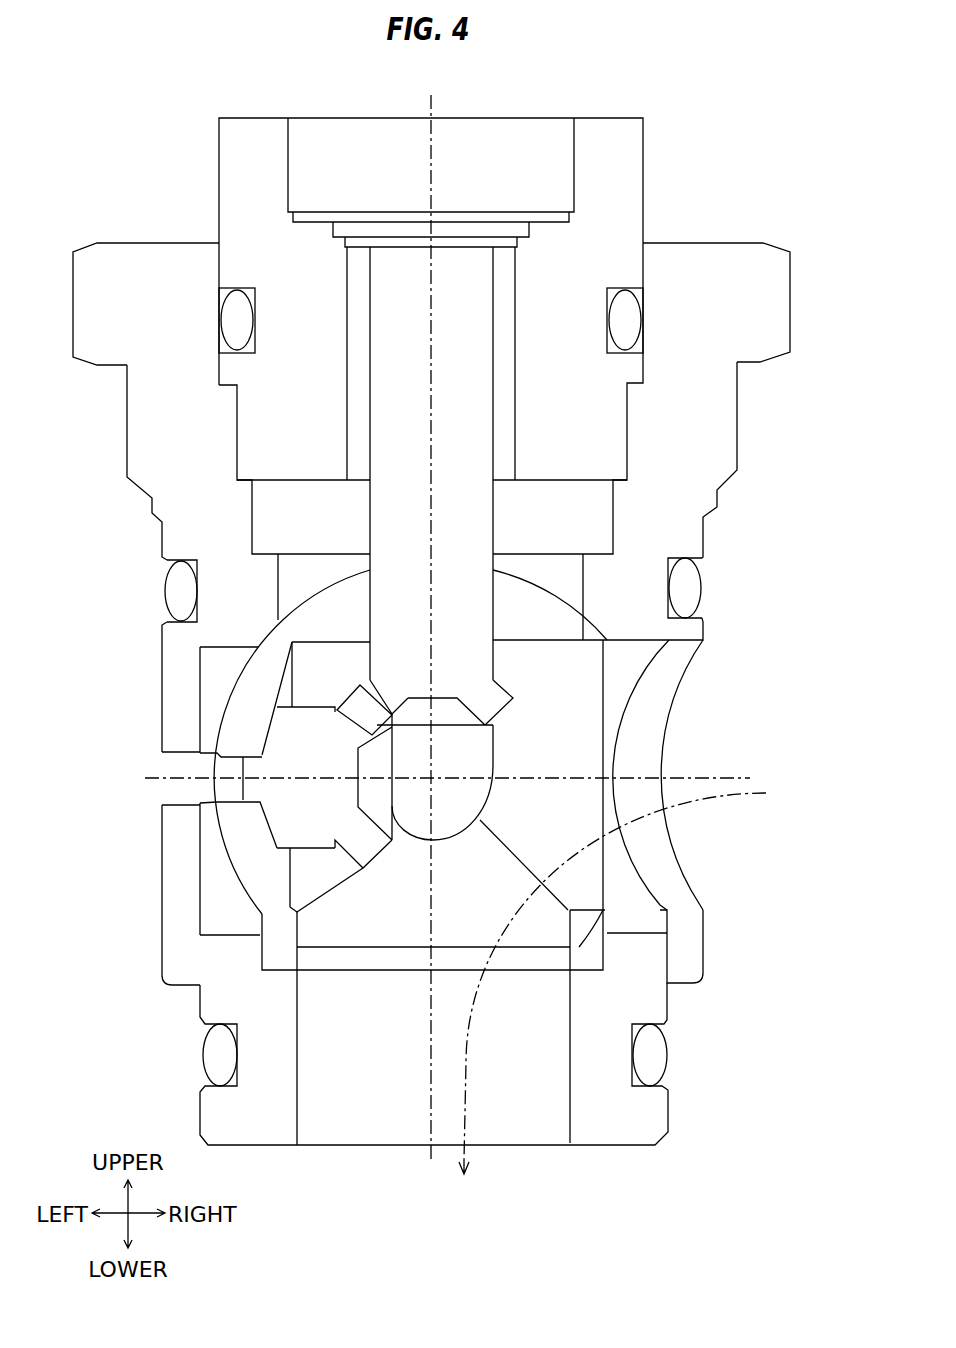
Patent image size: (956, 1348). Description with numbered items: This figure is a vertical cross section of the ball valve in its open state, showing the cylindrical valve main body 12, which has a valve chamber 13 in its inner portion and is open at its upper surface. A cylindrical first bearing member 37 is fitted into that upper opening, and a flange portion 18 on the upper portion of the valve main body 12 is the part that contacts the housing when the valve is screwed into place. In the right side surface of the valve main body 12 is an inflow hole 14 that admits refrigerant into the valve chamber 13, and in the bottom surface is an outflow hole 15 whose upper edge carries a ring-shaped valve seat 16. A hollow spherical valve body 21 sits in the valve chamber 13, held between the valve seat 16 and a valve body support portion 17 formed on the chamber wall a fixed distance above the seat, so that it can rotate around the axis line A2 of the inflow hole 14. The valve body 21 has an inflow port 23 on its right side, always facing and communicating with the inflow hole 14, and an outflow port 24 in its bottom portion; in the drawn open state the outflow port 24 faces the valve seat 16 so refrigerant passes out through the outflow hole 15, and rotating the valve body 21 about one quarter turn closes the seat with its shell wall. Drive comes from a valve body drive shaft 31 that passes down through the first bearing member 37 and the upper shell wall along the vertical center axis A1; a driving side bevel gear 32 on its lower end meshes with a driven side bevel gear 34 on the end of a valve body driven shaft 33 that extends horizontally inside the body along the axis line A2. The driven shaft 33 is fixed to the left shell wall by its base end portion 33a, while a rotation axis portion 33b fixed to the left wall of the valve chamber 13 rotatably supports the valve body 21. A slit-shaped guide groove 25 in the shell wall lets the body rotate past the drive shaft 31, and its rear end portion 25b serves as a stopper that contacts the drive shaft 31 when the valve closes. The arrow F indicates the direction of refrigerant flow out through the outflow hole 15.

The valve main body 12 is at (748, 433).
The valve chamber 13 is at (213, 843).
The inflow hole 14 is at (657, 740).
The outflow hole 15 is at (570, 1080).
The valve seat 16 is at (283, 913).
The valve body support portion 17 is at (282, 619).
The flange portion 18 is at (773, 302).
The valve body 21 is at (555, 592).
The inflow port 23 is at (612, 690).
The outflow port 24 is at (362, 950).
The guide groove 25 is at (487, 738).
The rear end portion 25b is at (443, 833).
The valve body drive shaft 31 is at (370, 425).
The driving side bevel gear 32 is at (353, 720).
The valve body driven shaft 33 is at (300, 862).
The base end portion 33a is at (253, 752).
The rotation axis portion 33b is at (178, 810).
The driven side bevel gear 34 is at (387, 687).
The first bearing member 37 is at (243, 184).
The center axis A1 is at (432, 112).
The axis line of the inflow hole A2 is at (554, 776).
The flow direction F is at (612, 990).